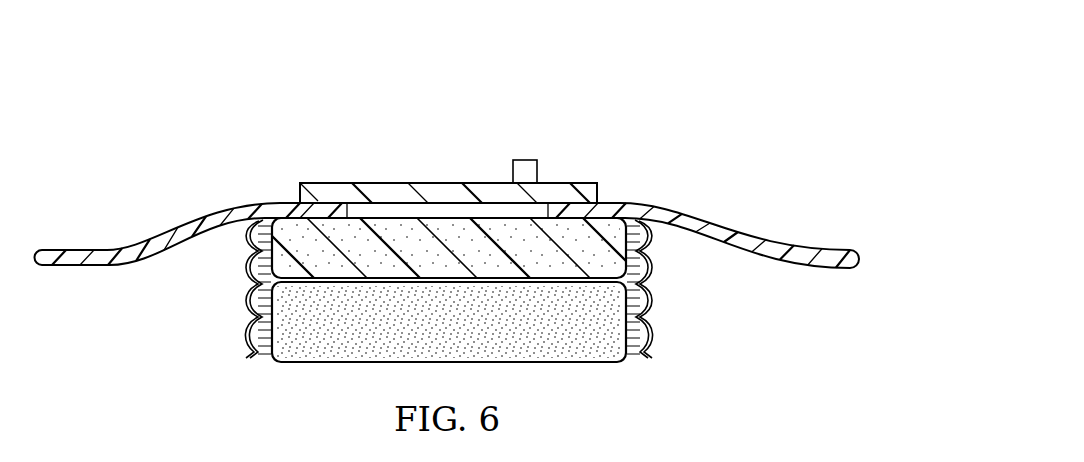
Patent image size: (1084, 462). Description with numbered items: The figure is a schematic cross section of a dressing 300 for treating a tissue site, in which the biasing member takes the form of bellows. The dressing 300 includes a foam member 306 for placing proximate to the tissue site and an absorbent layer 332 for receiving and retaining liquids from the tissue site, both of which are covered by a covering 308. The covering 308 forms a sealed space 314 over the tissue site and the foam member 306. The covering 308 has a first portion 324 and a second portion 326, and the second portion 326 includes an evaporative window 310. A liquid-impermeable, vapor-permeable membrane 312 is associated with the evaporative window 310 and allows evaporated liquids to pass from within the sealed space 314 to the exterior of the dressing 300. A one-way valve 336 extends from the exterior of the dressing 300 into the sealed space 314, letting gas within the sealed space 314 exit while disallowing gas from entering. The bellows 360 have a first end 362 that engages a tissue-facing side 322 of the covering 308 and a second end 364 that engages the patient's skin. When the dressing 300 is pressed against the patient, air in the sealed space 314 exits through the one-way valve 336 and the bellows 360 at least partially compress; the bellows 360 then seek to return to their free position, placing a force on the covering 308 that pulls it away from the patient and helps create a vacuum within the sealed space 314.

The dressing 300 is at (702, 70).
The foam member 306 is at (430, 330).
The covering 308 is at (703, 209).
The evaporative window 310 is at (372, 210).
The liquid-impermeable, vapor-permeable membrane 312 is at (443, 179).
The sealed space 314 is at (569, 334).
The tissue-facing side 322 is at (216, 234).
The first portion 324 is at (784, 246).
The second portion 326 is at (325, 203).
The absorbent layer 332 is at (428, 258).
The one-way valve 336 is at (526, 160).
The bellows 360 is at (247, 354).
The first end 362 is at (642, 226).
The second end 364 is at (650, 355).